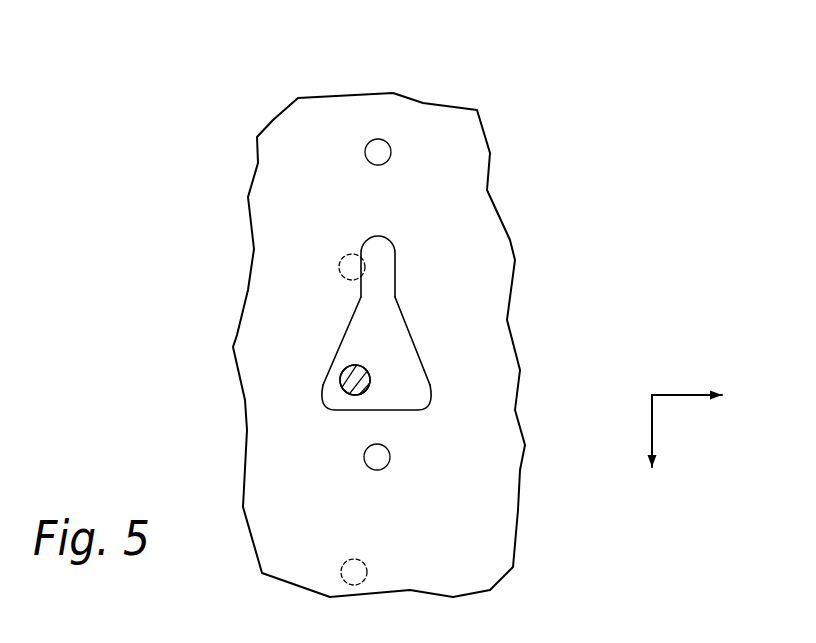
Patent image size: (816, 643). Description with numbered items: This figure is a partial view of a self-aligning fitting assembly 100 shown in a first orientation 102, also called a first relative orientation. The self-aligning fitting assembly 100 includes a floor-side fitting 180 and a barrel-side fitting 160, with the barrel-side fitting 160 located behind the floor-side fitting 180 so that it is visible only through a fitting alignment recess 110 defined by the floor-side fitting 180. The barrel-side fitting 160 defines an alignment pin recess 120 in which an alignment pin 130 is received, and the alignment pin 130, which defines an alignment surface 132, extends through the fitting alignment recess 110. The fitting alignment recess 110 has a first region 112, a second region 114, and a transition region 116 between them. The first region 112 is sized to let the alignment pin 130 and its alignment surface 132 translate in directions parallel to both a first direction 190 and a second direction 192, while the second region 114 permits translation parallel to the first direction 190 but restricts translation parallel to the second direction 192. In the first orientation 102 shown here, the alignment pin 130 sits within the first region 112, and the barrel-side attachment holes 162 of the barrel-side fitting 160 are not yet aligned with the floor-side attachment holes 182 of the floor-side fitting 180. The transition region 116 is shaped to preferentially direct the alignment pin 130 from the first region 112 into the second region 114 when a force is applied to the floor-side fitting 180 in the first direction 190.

The self-aligning fitting assembly 100 is at (585, 65).
The first orientation 102 is at (162, 270).
The fitting alignment recess 110 is at (423, 358).
The first region 112 is at (408, 380).
The second region 114 is at (378, 252).
The transition region 116 is at (380, 295).
The alignment pin recess 120 is at (335, 375).
The alignment pin 130 is at (335, 382).
The alignment surface 132 is at (353, 396).
The barrel-side fitting 160 is at (367, 325).
The barrel-side attachment holes 162 is at (340, 266).
The floor-side fitting 180 is at (477, 283).
The floor-side attachment holes 182 is at (375, 150).
The first direction 190 is at (652, 425).
The second direction 192 is at (678, 395).